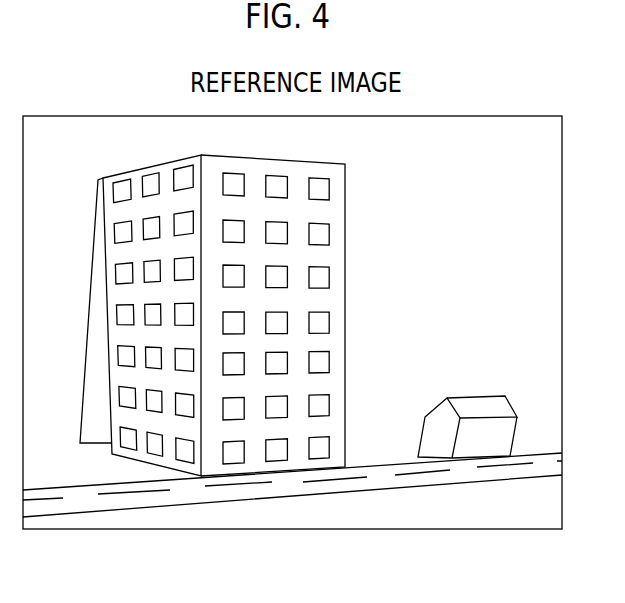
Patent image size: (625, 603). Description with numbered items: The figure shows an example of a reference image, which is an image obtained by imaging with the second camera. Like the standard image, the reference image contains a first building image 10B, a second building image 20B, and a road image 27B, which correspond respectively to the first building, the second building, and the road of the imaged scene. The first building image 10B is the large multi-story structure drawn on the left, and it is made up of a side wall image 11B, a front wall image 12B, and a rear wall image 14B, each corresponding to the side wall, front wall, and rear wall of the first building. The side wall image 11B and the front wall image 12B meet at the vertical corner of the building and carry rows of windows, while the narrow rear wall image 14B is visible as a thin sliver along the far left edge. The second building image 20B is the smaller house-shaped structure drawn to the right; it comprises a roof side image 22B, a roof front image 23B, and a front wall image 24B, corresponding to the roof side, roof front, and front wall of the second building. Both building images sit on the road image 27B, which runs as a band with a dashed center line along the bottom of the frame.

The first building image 10B is at (231, 297).
The side wall image 11B is at (133, 180).
The front wall image 12B is at (328, 297).
The rear wall image 14B is at (92, 282).
The second building image 20B is at (454, 358).
The roof side image 22B is at (435, 402).
The roof front image 23B is at (477, 407).
The front wall image 24B is at (502, 433).
The road image 27B is at (342, 485).